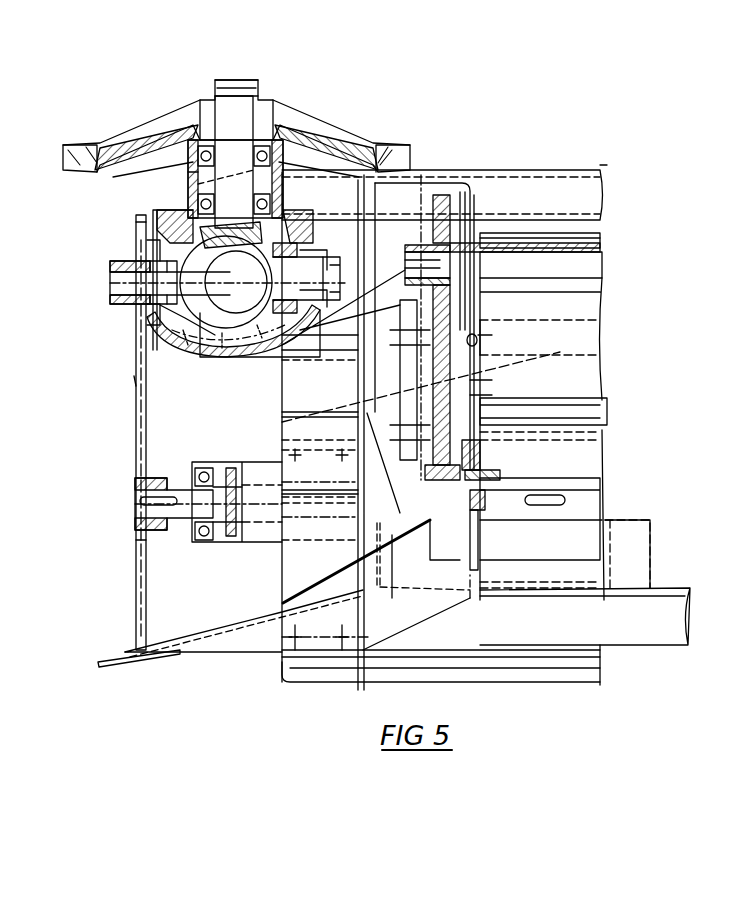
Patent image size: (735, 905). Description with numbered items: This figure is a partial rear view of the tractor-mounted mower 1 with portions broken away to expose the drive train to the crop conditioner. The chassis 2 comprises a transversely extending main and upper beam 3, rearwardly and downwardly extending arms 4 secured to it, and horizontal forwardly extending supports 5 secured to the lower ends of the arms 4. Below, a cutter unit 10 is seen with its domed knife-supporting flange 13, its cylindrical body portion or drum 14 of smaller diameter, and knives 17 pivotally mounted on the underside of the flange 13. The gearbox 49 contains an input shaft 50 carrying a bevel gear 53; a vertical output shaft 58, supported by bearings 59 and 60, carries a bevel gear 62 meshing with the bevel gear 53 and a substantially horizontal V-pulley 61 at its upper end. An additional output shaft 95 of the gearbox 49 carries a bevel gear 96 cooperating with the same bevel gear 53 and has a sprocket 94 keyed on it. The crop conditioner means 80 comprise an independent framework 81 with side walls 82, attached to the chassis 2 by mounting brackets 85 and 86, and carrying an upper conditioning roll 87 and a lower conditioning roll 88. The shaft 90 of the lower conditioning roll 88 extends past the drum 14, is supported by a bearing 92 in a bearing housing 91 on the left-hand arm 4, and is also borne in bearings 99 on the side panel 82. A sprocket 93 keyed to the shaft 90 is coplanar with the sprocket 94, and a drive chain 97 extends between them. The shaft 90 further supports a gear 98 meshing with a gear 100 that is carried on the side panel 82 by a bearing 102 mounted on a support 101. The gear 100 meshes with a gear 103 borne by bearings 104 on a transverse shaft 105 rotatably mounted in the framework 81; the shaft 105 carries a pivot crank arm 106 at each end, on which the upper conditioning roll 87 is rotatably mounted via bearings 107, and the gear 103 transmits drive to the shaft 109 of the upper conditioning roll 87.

The mower 1 is at (240, 671).
The chassis 2 is at (556, 157).
The main and upper beam 3 is at (607, 162).
The arms 4 is at (282, 588).
The supports 5 is at (355, 682).
The cutter unit 10 is at (664, 554).
The knife-supporting flange 13 is at (190, 642).
The cylindrical body portion 14 is at (652, 528).
The knives 17 is at (108, 667).
The gearbox 49 is at (185, 322).
The input shaft 50 is at (212, 322).
The bevel gear 53 is at (134, 374).
The vertical output shaft 58 is at (198, 186).
The bearing 59 is at (196, 170).
The bearing 60 is at (188, 214).
The V-pulley 61 is at (312, 136).
The bevel gear 62 is at (200, 250).
The crop conditioner means 80 is at (621, 233).
The framework 81 is at (462, 183).
The side walls 82 is at (462, 212).
The mounting bracket 85 is at (436, 630).
The mounting bracket 86 is at (280, 345).
The upper conditioning roll 87 is at (600, 302).
The lower conditioning roll 88 is at (605, 447).
The shaft 90 is at (135, 508).
The bearing housing 91 is at (248, 462).
The bearing 92 is at (196, 468).
The sprocket 93 is at (136, 564).
The sprocket 94 is at (140, 316).
The additional output shaft 95 is at (110, 289).
The bevel gear 96 is at (236, 350).
The drive chain 97 is at (134, 394).
The gear 98 is at (474, 575).
The bearings 99 is at (482, 458).
The gear 100 is at (482, 428).
The support 101 is at (488, 340).
The bearing 102 is at (476, 402).
The gear 103 is at (438, 195).
The bearings 104 is at (458, 228).
The transverse shaft 105 is at (605, 268).
The pivot crank arm 106 is at (390, 292).
The bearings 107 is at (395, 318).
The shaft 109 is at (600, 352).